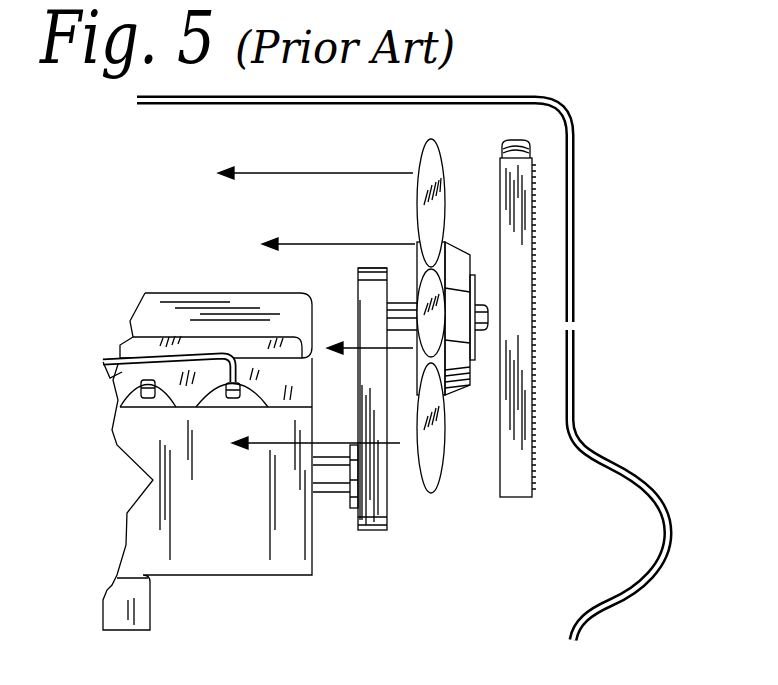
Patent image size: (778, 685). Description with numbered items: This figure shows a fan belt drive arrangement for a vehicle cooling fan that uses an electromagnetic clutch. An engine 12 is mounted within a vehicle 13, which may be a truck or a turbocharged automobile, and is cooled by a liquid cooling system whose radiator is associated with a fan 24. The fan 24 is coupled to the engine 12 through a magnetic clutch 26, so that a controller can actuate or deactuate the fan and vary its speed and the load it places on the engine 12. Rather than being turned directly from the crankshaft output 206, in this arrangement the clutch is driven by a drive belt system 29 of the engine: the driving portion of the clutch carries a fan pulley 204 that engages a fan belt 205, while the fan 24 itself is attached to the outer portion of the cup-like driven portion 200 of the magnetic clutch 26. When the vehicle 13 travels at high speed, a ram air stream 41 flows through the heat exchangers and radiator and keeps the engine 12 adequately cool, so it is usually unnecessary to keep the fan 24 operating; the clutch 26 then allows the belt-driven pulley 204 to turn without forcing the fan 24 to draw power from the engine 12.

The engine 12 is at (261, 583).
The vehicle 13 is at (612, 175).
The fan 24 is at (438, 150).
The magnetic clutch 26 is at (479, 384).
The drive belt system 29 is at (395, 483).
The ram air stream 41 is at (323, 160).
The driven portion 200 is at (445, 242).
The fan pulley 204 is at (355, 283).
The fan belt 205 is at (380, 393).
The crankshaft output 206 is at (332, 485).